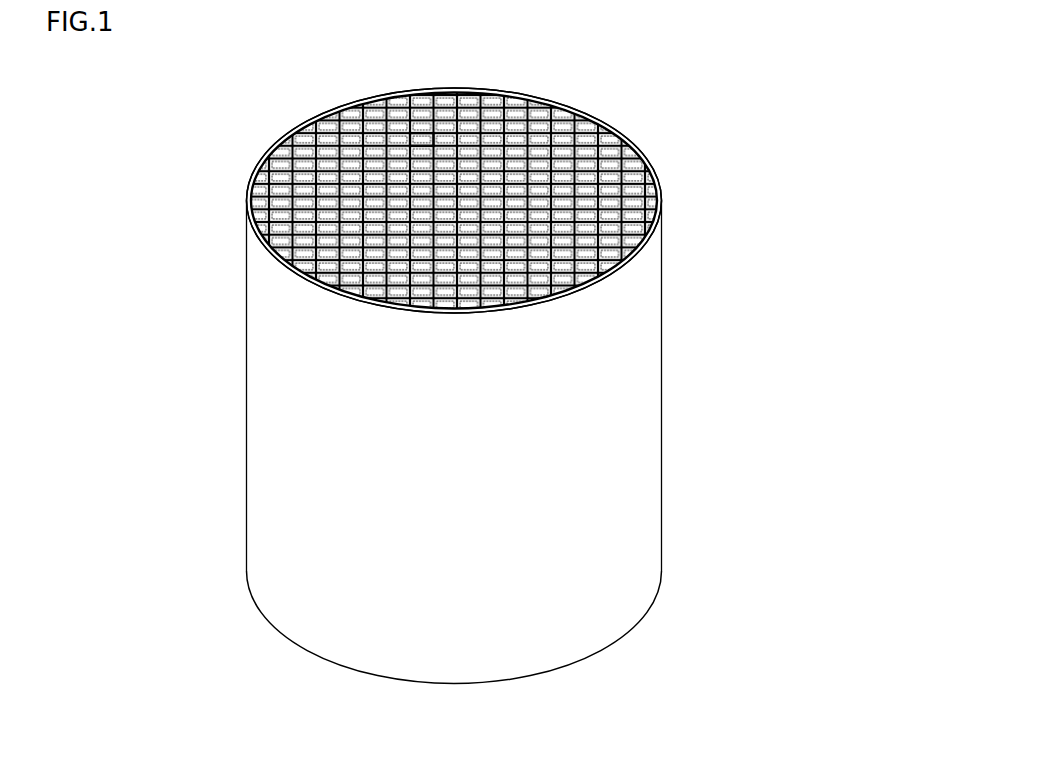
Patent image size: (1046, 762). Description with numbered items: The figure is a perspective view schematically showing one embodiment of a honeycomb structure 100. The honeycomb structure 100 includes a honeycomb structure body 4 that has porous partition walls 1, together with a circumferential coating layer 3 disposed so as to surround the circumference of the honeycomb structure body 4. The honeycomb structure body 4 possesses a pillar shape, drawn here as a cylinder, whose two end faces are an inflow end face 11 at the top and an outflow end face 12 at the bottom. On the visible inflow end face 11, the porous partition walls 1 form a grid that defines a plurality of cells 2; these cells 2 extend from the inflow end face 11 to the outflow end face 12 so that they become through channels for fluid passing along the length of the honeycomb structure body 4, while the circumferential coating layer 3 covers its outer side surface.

The honeycomb structure 100 is at (732, 46).
The porous partition walls 1 is at (500, 130).
The cells 2 is at (420, 140).
The circumferential coating layer 3 is at (638, 275).
The honeycomb structure body 4 is at (667, 388).
The inflow end face 11 is at (258, 156).
The outflow end face 12 is at (259, 628).